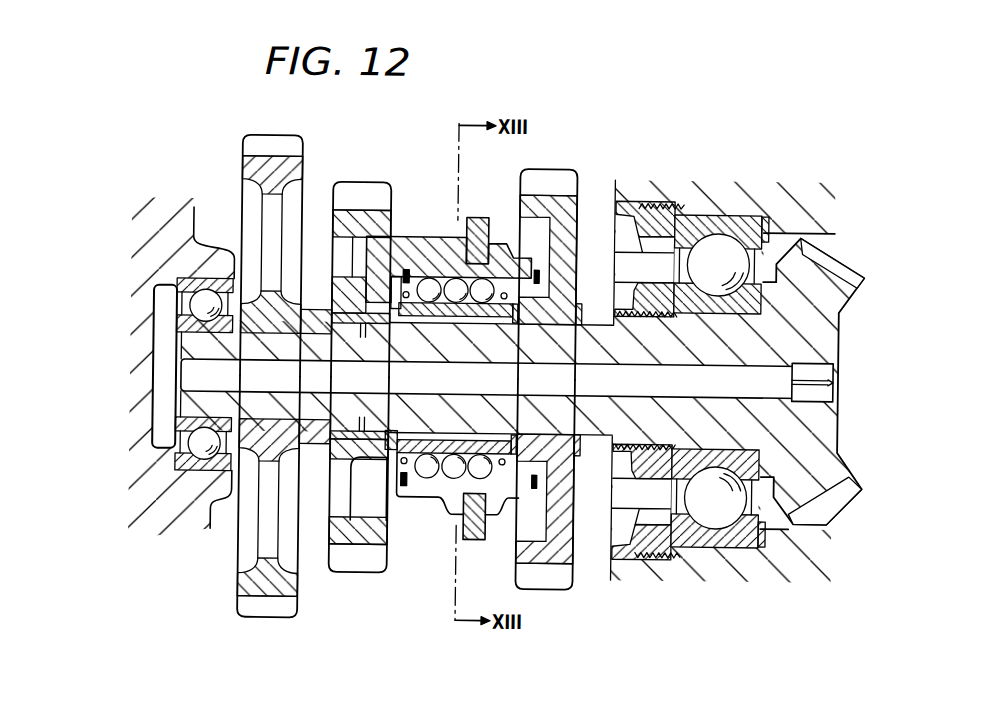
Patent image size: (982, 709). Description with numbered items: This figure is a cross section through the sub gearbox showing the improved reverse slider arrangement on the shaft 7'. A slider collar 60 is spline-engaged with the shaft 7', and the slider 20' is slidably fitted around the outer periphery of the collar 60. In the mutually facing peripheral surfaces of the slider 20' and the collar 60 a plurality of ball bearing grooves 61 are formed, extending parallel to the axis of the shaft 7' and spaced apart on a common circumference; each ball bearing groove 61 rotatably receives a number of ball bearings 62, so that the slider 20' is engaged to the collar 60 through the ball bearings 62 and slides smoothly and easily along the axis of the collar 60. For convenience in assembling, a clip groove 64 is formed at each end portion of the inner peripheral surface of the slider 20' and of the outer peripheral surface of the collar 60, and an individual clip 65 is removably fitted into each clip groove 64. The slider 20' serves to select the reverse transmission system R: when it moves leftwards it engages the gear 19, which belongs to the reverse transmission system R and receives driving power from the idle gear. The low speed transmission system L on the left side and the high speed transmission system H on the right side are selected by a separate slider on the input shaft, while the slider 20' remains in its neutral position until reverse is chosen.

The gear 19 is at (353, 180).
The slider 20' is at (441, 354).
The slider collar 60 is at (440, 310).
The ball bearing groove 61 is at (418, 466).
The ball bearings 62 is at (436, 476).
The clip groove 64 is at (540, 264).
The clip 65 is at (538, 472).
The shaft 7' is at (631, 359).
The low speed transmission system L is at (273, 616).
The reverse transmission system R is at (366, 572).
The high speed transmission system H is at (551, 581).